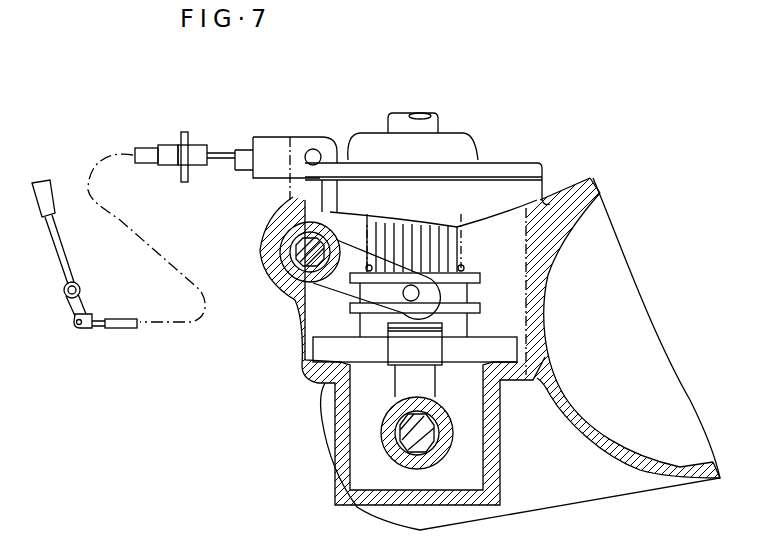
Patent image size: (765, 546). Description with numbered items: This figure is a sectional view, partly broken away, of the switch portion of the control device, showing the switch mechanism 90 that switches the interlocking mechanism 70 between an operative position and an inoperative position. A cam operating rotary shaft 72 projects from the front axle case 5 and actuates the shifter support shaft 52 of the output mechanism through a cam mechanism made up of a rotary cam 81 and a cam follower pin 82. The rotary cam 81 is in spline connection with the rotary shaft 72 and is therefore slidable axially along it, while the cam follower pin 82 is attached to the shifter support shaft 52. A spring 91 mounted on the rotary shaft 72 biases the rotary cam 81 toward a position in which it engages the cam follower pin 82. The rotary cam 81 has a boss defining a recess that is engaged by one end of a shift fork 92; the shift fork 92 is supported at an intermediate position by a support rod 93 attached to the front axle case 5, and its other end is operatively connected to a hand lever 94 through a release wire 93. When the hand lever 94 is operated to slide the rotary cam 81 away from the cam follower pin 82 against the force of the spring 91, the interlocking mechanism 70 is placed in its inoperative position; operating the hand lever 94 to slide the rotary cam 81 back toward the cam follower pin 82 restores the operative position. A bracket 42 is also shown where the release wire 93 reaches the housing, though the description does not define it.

The front axle case 5 is at (580, 184).
The cable bracket 42 is at (297, 186).
The shifter support shaft 52 is at (405, 442).
The interlocking mechanism 70 is at (492, 237).
The cam operating rotary shaft 72 is at (397, 126).
The rotary cam 81 is at (325, 346).
The cam follower pin 82 is at (425, 352).
The switch mechanism 90 is at (318, 293).
The spring 91 is at (478, 262).
The shift fork 92 is at (432, 292).
The release wire 93 is at (300, 268).
The hand lever 94 is at (43, 198).